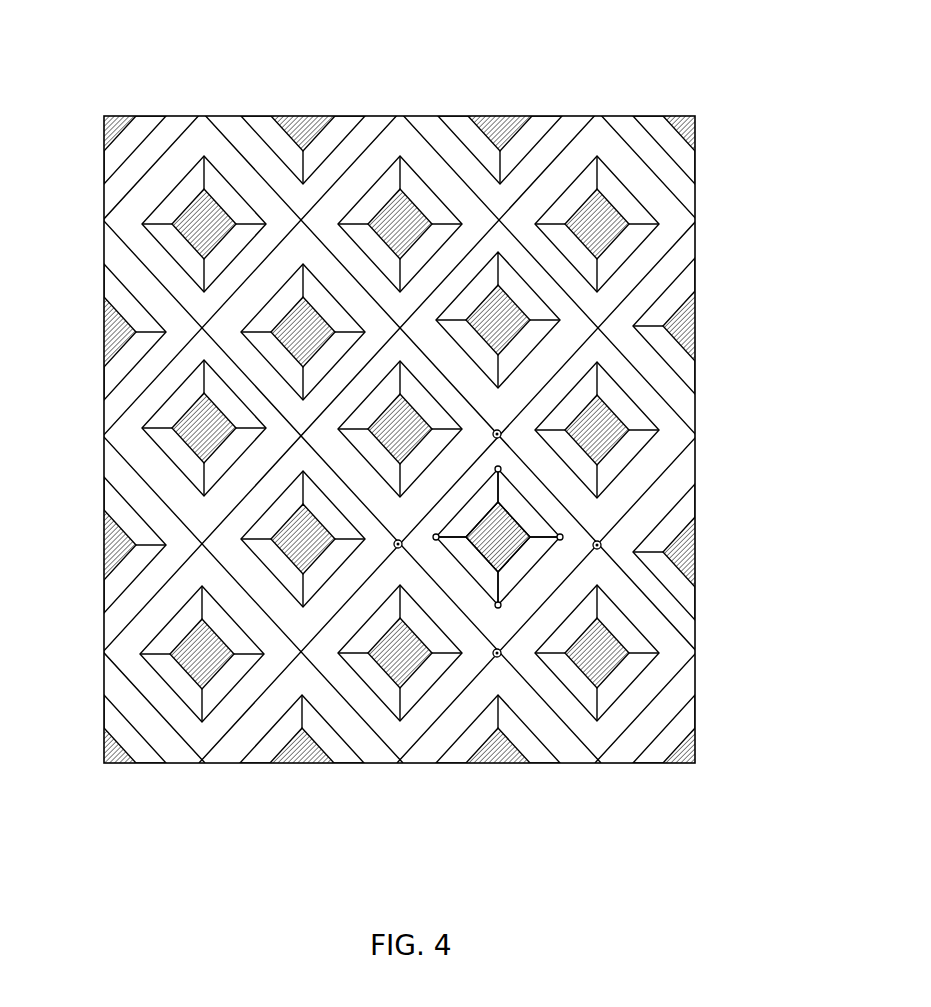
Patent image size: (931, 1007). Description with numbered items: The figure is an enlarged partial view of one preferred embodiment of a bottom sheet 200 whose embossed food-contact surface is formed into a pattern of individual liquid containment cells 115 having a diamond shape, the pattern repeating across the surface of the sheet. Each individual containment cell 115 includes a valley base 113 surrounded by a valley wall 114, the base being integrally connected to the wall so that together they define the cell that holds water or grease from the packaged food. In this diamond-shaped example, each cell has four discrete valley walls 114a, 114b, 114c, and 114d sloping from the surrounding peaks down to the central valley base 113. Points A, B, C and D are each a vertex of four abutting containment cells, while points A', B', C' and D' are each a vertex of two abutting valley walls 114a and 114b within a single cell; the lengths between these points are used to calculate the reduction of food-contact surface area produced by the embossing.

The bottom sheet 200 is at (402, 104).
The valley base 113 is at (212, 660).
The valley wall 114 is at (170, 665).
The first discrete valley wall 114a is at (488, 582).
The second discrete valley wall 114b is at (528, 565).
The third discrete valley wall 114c is at (527, 517).
The fourth discrete valley wall 114d is at (483, 498).
The individual liquid containment cell 115 is at (298, 702).